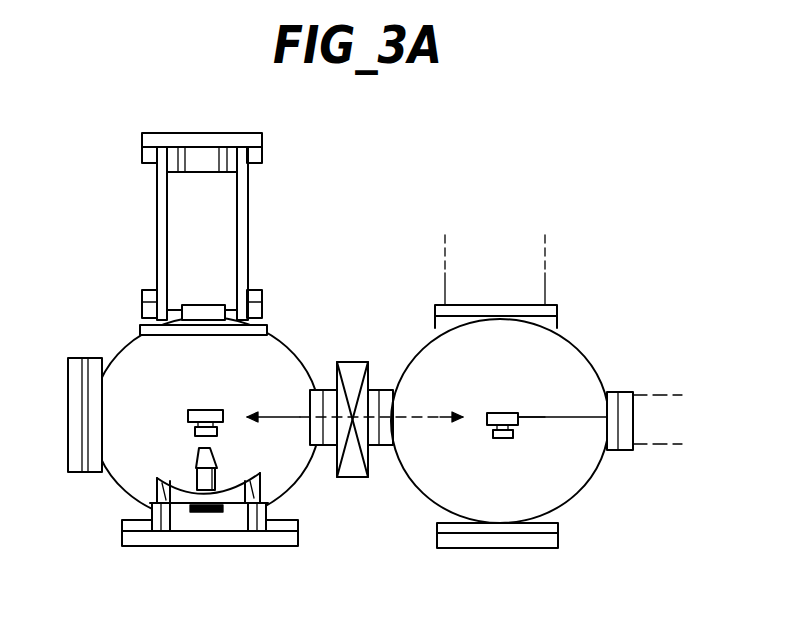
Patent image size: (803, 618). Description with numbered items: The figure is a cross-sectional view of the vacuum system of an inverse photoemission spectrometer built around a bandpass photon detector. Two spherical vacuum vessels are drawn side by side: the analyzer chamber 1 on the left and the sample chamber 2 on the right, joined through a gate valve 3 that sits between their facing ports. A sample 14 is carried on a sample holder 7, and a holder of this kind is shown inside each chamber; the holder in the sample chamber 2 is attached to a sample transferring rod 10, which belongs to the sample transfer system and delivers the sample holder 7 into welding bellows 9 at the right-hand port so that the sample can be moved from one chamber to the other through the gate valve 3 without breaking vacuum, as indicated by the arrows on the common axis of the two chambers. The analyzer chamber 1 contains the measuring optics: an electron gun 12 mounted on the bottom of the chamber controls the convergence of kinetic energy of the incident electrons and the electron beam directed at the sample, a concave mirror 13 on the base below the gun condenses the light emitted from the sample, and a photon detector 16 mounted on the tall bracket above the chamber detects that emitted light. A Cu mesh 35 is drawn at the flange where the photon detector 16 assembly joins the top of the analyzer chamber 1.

The analyzer chamber 1 is at (168, 397).
The sample chamber 2 is at (474, 378).
The valve 3 is at (347, 478).
The sample holder 7 is at (214, 412).
The bellows 9 is at (690, 448).
The sample transferring rod 10 is at (522, 414).
The electron gun 12 is at (200, 478).
The concave mirror 13 is at (238, 495).
The sample 14 is at (507, 438).
The photon detector 16 is at (208, 217).
The Cu mesh 35 is at (177, 332).